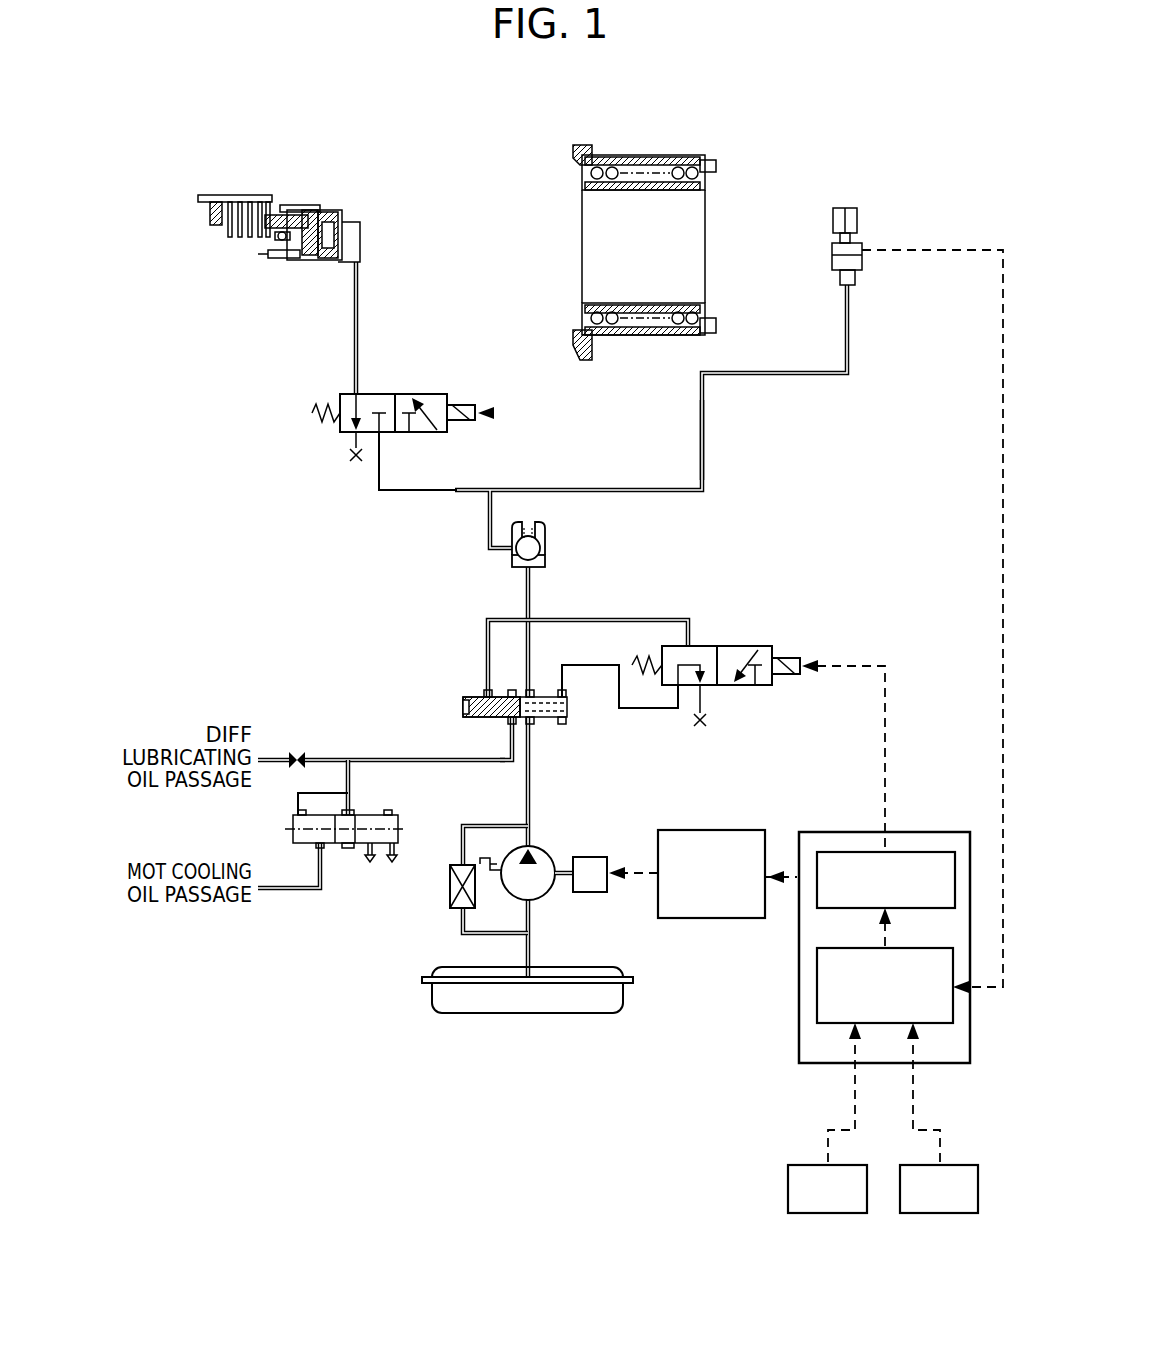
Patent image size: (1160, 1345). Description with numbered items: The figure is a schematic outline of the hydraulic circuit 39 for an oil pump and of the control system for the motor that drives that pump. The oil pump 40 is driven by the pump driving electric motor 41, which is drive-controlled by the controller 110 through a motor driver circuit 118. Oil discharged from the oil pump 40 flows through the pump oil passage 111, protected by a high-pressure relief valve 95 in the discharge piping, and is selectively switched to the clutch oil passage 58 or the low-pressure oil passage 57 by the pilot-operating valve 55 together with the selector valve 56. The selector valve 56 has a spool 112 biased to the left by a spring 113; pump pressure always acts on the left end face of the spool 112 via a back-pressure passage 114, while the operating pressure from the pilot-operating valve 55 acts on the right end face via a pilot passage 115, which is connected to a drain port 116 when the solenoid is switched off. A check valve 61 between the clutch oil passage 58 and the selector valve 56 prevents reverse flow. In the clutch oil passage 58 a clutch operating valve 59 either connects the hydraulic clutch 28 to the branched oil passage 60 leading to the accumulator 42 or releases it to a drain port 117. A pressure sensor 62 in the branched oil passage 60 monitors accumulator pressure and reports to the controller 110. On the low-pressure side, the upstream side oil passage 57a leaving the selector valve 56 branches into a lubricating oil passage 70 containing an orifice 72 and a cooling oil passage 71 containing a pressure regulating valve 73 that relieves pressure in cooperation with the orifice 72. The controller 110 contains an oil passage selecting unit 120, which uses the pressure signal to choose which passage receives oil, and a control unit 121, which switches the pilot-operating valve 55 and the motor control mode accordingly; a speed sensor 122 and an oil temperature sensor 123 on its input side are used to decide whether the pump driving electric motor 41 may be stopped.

The hydraulic clutch 28 is at (348, 208).
The hydraulic circuit 39 is at (292, 512).
The oil pump 40 is at (555, 853).
The pump driving electric motor 41 is at (595, 893).
The accumulator 42 is at (722, 148).
The pilot-operating valve 55 is at (740, 645).
The selector valve 56 is at (546, 722).
The low-pressure oil passage 57 is at (430, 755).
The upstream side oil passage 57a is at (365, 755).
The clutch oil passage 58 is at (377, 478).
The clutch operating valve 59 is at (435, 393).
The branched oil passage 60 is at (700, 491).
The check valve 61 is at (546, 546).
The pressure sensor 62 is at (864, 227).
The lubricating oil passage 70 is at (265, 754).
The cooling oil passage 71 is at (275, 892).
The orifice 72 is at (298, 750).
The pressure regulating valve 73 is at (340, 846).
The high-pressure relief valve 95 is at (448, 882).
The controller 110 is at (877, 948).
The pump oil passage 111 is at (510, 774).
The spool 112 is at (476, 695).
The spring 113 is at (566, 714).
The back-pressure passage 114 is at (487, 650).
The pilot passage 115 is at (648, 711).
The drain port 116 is at (703, 700).
The drain port 117 is at (348, 442).
The motor driver circuit 118 is at (690, 920).
The oil passage selecting unit 120 is at (817, 1000).
The control unit 121 is at (930, 852).
The speed sensor 122 is at (958, 1215).
The oil temperature sensor 123 is at (838, 1215).